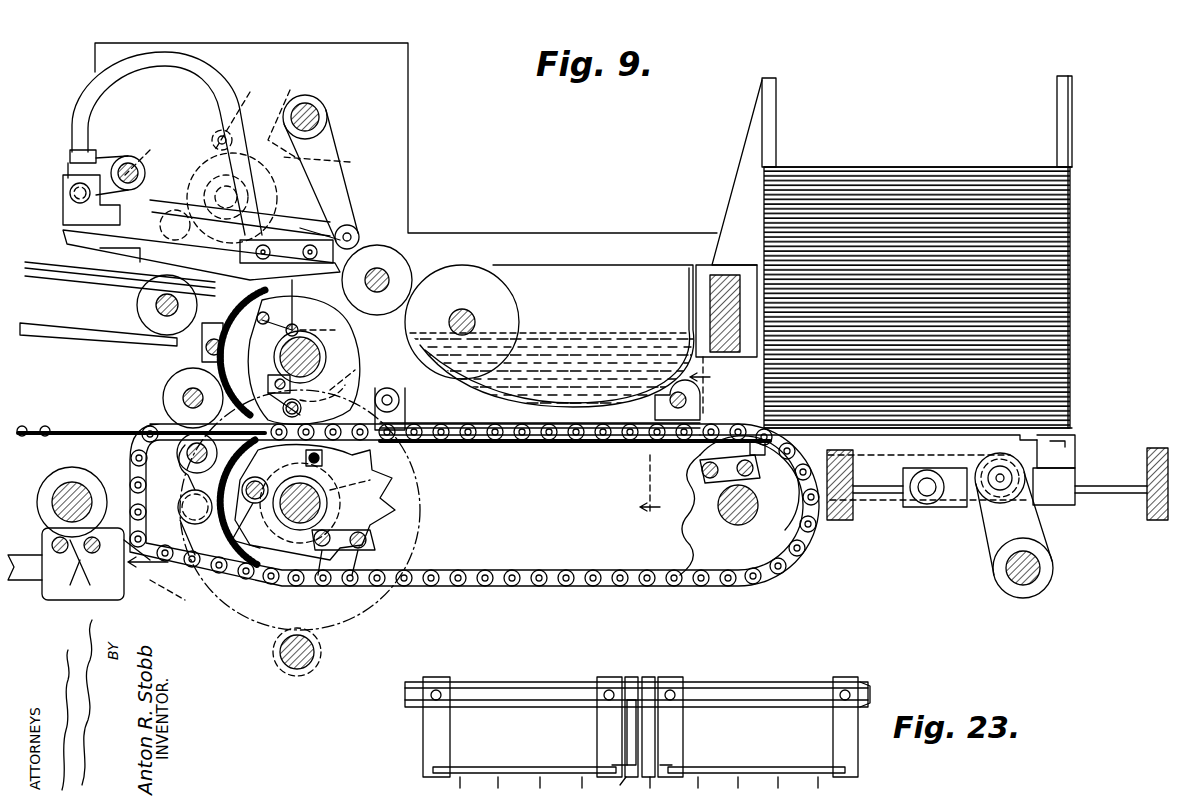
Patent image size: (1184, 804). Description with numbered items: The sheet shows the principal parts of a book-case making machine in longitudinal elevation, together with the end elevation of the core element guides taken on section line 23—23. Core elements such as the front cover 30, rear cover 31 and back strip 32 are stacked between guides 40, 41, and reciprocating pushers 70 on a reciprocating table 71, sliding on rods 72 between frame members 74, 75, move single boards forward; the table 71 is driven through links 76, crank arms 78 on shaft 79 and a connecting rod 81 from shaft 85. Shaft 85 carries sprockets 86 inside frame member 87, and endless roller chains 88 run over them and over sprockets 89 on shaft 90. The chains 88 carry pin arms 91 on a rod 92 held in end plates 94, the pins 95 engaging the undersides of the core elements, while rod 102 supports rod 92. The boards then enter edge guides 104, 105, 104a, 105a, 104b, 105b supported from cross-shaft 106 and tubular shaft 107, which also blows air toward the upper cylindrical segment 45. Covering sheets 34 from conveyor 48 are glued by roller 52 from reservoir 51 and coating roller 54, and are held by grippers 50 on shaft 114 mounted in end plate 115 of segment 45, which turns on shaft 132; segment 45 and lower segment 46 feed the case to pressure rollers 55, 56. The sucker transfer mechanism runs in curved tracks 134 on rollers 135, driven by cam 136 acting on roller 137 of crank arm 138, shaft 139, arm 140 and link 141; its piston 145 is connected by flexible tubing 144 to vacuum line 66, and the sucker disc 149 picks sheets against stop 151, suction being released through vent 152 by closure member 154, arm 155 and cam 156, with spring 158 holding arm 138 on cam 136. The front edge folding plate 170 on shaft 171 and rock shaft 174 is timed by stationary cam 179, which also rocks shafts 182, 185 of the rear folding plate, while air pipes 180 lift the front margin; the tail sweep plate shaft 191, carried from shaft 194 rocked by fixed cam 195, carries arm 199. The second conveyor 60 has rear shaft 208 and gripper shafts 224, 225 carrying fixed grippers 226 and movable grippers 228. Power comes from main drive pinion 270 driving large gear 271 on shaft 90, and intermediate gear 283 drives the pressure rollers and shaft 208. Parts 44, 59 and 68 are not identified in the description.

In FIG. 9, the section line 23 is at (675, 443).
In FIG. 9, the front cover 30 is at (955, 178).
In FIG. 23, the front cover 30 is at (525, 767).
In FIG. 23, the rear cover 31 is at (758, 767).
In FIG. 23, the back strip 32 is at (640, 770).
In FIG. 9, the covering 34 is at (48, 262).
In FIG. 9, the guide 40 is at (776, 112).
In FIG. 9, the guide 41 is at (1057, 106).
In FIG. 9, the chain 44 is at (600, 601).
In FIG. 9, the upper cylindrical segment 45 is at (202, 345).
In FIG. 9, the lower cylindrical segment 46 is at (222, 545).
In FIG. 9, the conveyor 48 is at (108, 310).
In FIG. 9, the grippers 50 is at (377, 280).
In FIG. 9, the reservoir 51 is at (607, 275).
In FIG. 9, the roller 52 is at (470, 275).
In FIG. 9, the coating roller 54 is at (405, 250).
In FIG. 9, the pressure roller 55 is at (172, 384).
In FIG. 9, the pressure roller 56 is at (166, 420).
In FIG. 9, the arm 59 is at (160, 562).
In FIG. 9, the second conveyor system 60 is at (100, 425).
In FIG. 9, the vacuum line 66 is at (70, 193).
In FIG. 9, the roller 68 is at (178, 510).
In FIG. 9, the reciprocating pushers 70 is at (1037, 443).
In FIG. 9, the reciprocating table 71 is at (1058, 505).
In FIG. 9, the rods 72 is at (890, 495).
In FIG. 9, the frame member 74 is at (845, 520).
In FIG. 9, the frame member 75 is at (1157, 520).
In FIG. 9, the links 76 is at (945, 507).
In FIG. 9, the crank arms 78 is at (990, 540).
In FIG. 9, the shaft 79 is at (1008, 578).
In FIG. 9, the connecting rod 81 is at (904, 451).
In FIG. 9, the shaft 85 is at (738, 526).
In FIG. 9, the sprockets 86 is at (685, 545).
In FIG. 9, the supporting frame member 87 is at (400, 136).
In FIG. 9, the endless roller chains 88 is at (684, 585).
In FIG. 9, the sprockets 89 is at (420, 514).
In FIG. 9, the shaft 90 is at (328, 505).
In FIG. 9, the pin arms 91 is at (764, 474).
In FIG. 9, the rod 92 is at (372, 532).
In FIG. 9, the end plates 94 is at (358, 605).
In FIG. 9, the pins 95 is at (332, 580).
In FIG. 23, the pins 95 is at (498, 782).
In FIG. 9, the rod 102 is at (750, 480).
In FIG. 23, the edge guide 104 is at (423, 736).
In FIG. 23, the edge guide 104a is at (683, 724).
In FIG. 23, the edge guide 104b is at (618, 784).
In FIG. 9, the edge guide 105 is at (430, 395).
In FIG. 23, the edge guide 105 is at (597, 720).
In FIG. 23, the edge guide 105a is at (845, 724).
In FIG. 23, the edge guide 105b is at (658, 777).
In FIG. 9, the cross-shaft 106 is at (666, 401).
In FIG. 23, the cross-shaft 106 is at (775, 684).
In FIG. 9, the tubular shaft 107 is at (475, 375).
In FIG. 9, the rotatable shaft 114 is at (345, 290).
In FIG. 9, the end plate 115 is at (340, 360).
In FIG. 9, the rotating shaft 132 is at (325, 352).
In FIG. 9, the curved tracks 134 is at (63, 214).
In FIG. 9, the rollers 135 is at (300, 230).
In FIG. 9, the rotating cam 136 is at (190, 195).
In FIG. 9, the roller 137 is at (237, 111).
In FIG. 9, the crank arm 138 is at (289, 113).
In FIG. 9, the shaft 139 is at (322, 107).
In FIG. 9, the arm 140 is at (332, 146).
In FIG. 9, the link 141 is at (352, 226).
In FIG. 9, the flexible tubing 144 is at (215, 63).
In FIG. 9, the piston 145 is at (240, 252).
In FIG. 9, the sucker disc 149 is at (242, 427).
In FIG. 9, the stop 151 is at (160, 262).
In FIG. 9, the vent 152 is at (70, 164).
In FIG. 9, the closure member 154 is at (112, 155).
In FIG. 9, the arm 155 is at (144, 155).
In FIG. 9, the cam 156 is at (212, 137).
In FIG. 9, the tension spring 158 is at (335, 158).
In FIG. 9, the front edge folding plate 170 is at (288, 310).
In FIG. 9, the shaft 171 is at (272, 352).
In FIG. 9, the rock shaft 174 is at (266, 331).
In FIG. 9, the stationary cam 179 is at (322, 397).
In FIG. 9, the pipes 180 is at (178, 470).
In FIG. 9, the shaft 182 is at (273, 393).
In FIG. 9, the shaft 185 is at (375, 409).
In FIG. 9, the shaft 191 is at (325, 458).
In FIG. 9, the shaft 194 is at (254, 525).
In FIG. 9, the fixed cam 195 is at (375, 484).
In FIG. 9, the arm 199 is at (263, 482).
In FIG. 9, the rear shaft 208 is at (80, 490).
In FIG. 9, the shaft 224 is at (66, 558).
In FIG. 9, the shaft 225 is at (151, 545).
In FIG. 9, the fixed grippers 226 is at (186, 596).
In FIG. 9, the movable grippers 228 is at (88, 569).
In FIG. 9, the main drive pinion 270 is at (322, 652).
In FIG. 9, the large gear 271 is at (380, 595).
In FIG. 9, the intermediate gear 283 is at (276, 600).